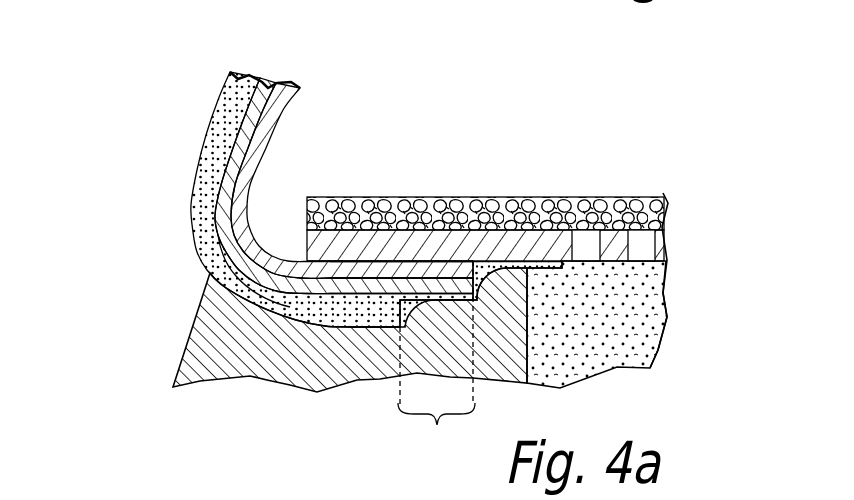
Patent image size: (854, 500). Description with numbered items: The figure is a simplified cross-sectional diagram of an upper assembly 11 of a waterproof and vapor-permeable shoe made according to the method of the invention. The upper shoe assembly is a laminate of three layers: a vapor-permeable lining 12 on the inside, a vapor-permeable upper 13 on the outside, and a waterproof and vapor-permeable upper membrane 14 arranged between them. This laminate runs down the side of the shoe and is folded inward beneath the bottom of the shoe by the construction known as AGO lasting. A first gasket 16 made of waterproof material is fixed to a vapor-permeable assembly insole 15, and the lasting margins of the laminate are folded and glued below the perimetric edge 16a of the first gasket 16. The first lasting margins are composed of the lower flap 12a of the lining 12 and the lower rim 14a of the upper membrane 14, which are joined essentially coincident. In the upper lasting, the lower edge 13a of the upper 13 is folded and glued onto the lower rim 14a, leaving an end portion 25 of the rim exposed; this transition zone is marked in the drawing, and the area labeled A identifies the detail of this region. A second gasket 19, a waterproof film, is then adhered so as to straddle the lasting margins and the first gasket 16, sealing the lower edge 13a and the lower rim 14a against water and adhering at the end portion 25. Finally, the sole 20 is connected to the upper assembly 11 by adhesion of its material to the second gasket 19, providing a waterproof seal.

The upper assembly 11 is at (192, 232).
The vapor-permeable lining 12 is at (257, 115).
The lower flap of the lining 12a is at (464, 275).
The vapor-permeable upper 13 is at (194, 192).
The lower edge of the upper 13a is at (347, 303).
The waterproof and vapor-permeable upper membrane 14 is at (226, 155).
The lower rim of the upper membrane 14a is at (424, 287).
The vapor-permeable assembly insole 15 is at (547, 198).
The first gasket 16 is at (612, 228).
The perimetric edge of the first gasket 16a is at (350, 242).
The second gasket 19 is at (266, 318).
The sole 20 is at (189, 334).
The end portion 25 is at (436, 365).
The region A is at (470, 103).